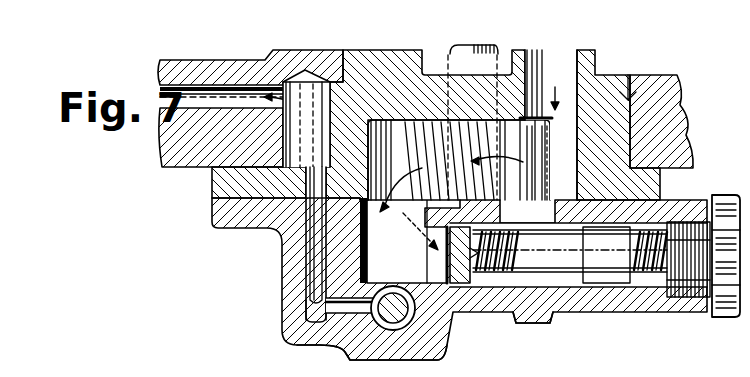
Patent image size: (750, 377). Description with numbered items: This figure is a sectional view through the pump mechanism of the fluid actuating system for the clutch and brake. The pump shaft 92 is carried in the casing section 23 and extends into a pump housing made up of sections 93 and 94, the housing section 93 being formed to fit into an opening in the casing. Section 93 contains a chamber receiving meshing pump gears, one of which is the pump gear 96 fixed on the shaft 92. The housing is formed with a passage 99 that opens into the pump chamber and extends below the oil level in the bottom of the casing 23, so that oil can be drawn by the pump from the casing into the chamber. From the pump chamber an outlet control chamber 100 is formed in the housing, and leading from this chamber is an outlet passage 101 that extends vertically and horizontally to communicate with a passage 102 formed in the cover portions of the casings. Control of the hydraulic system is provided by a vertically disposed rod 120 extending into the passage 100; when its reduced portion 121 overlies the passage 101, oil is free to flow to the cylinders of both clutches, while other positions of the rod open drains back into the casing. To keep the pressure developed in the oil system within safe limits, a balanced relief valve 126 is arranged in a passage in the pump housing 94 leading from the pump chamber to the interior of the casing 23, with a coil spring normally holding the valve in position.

The casing section 23 is at (163, 152).
The passage 102 is at (210, 92).
The outlet control chamber 100 is at (362, 258).
The pump gear 96 is at (430, 135).
The pump shaft 92 is at (450, 48).
The passage 99 is at (586, 68).
The pump housing section 93 is at (637, 80).
The outlet passage 101 is at (310, 320).
The rod 120 is at (400, 312).
The reduced portion 121 is at (413, 337).
The pump housing section 94 is at (537, 314).
The balanced relief valve 126 is at (563, 282).